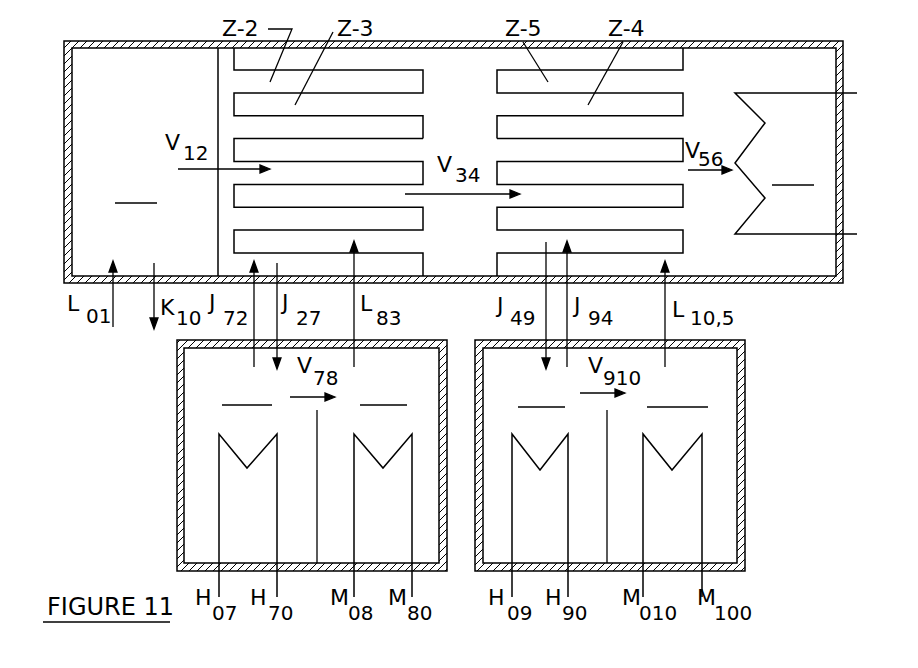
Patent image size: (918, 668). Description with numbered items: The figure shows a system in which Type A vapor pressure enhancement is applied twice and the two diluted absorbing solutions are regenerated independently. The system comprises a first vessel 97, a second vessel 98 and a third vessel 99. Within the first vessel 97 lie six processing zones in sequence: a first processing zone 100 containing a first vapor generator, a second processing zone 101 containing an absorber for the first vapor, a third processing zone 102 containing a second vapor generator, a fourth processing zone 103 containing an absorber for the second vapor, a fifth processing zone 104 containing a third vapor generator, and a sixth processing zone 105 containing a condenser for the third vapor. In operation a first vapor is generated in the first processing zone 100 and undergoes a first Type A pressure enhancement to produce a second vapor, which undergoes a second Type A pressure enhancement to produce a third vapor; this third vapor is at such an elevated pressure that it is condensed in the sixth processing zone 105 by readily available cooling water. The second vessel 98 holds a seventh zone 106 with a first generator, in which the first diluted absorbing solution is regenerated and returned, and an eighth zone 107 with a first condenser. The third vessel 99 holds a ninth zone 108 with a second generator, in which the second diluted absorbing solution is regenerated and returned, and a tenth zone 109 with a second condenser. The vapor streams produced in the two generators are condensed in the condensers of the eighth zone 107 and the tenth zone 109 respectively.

The first vessel 97 is at (436, 162).
The second vessel 98 is at (293, 455).
The third vessel 99 is at (628, 455).
The first processing zone 100 is at (157, 125).
The second processing zone 101 is at (402, 128).
The third processing zone 102 is at (407, 152).
The fourth processing zone 103 is at (638, 150).
The fifth processing zone 104 is at (630, 128).
The sixth processing zone 105 is at (814, 142).
The seventh zone 106 is at (268, 440).
The eighth zone 107 is at (402, 440).
The ninth zone 108 is at (560, 440).
The tenth zone 109 is at (698, 440).